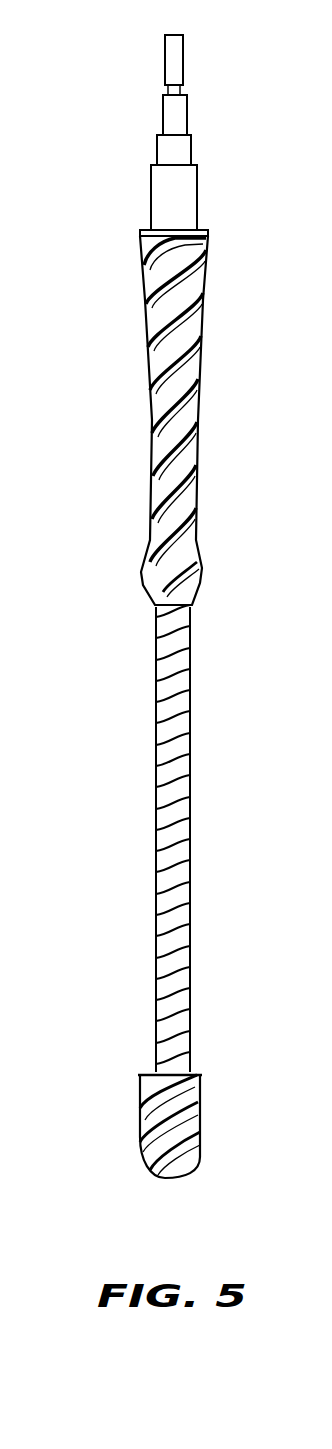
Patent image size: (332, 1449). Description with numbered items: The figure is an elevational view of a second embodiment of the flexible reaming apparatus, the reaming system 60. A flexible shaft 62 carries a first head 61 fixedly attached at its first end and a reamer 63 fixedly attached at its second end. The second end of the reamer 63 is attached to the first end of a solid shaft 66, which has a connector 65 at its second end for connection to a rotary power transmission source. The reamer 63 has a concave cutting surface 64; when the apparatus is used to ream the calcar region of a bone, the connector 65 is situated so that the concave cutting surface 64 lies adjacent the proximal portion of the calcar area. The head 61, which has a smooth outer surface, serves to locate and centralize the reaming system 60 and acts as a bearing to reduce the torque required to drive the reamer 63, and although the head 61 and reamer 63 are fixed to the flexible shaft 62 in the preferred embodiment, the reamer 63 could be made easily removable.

The reaming system 60 is at (153, 838).
The first head 61 is at (192, 1115).
The flexible shaft 62 is at (178, 850).
The reamer 63 is at (152, 420).
The concave cutting surface 64 is at (182, 423).
The connector 65 is at (178, 55).
The solid shaft 66 is at (183, 197).